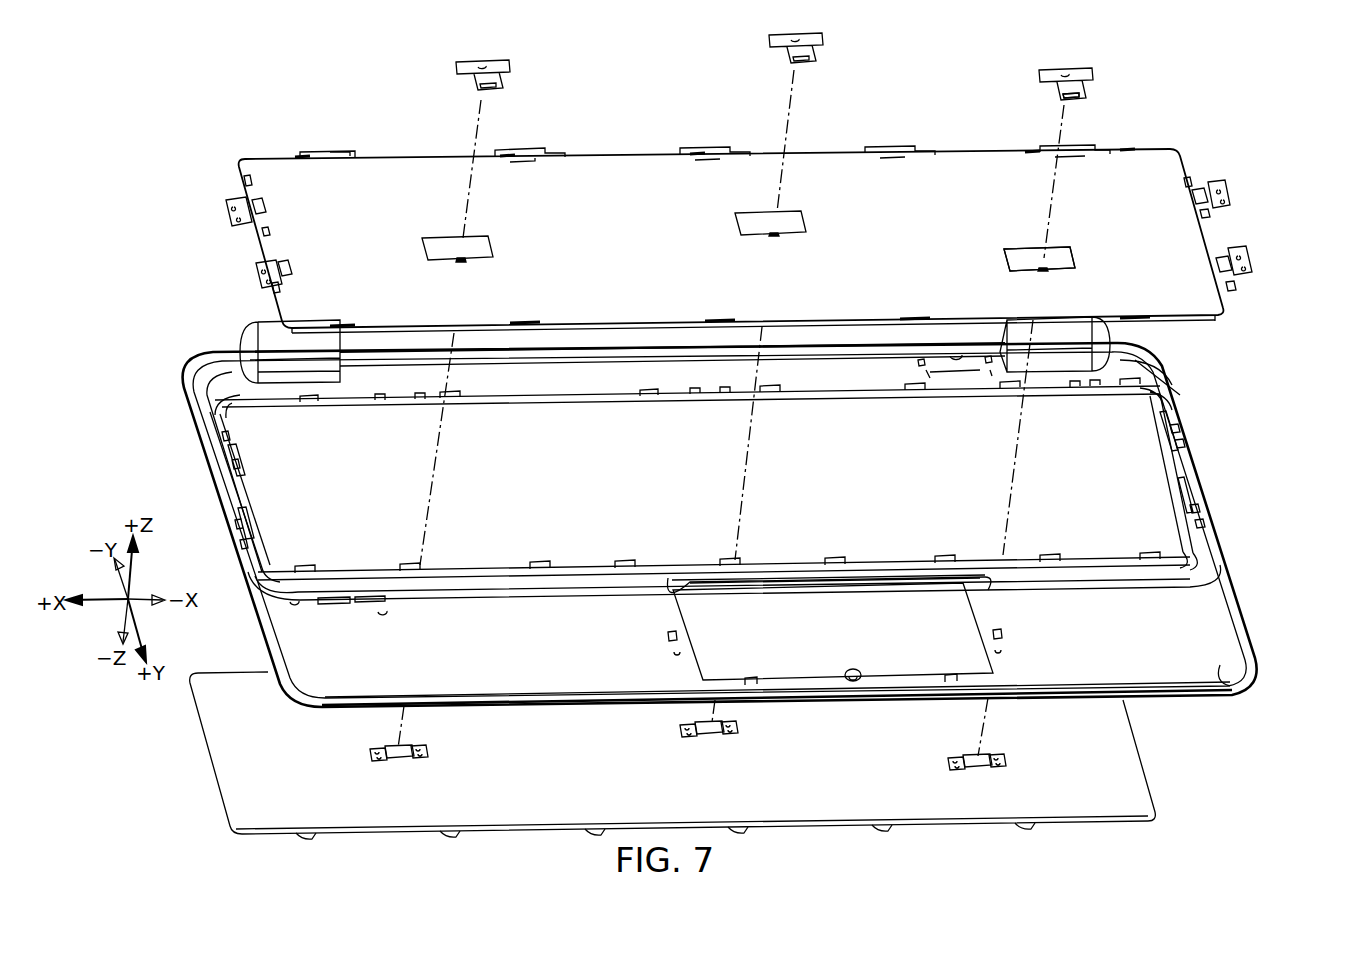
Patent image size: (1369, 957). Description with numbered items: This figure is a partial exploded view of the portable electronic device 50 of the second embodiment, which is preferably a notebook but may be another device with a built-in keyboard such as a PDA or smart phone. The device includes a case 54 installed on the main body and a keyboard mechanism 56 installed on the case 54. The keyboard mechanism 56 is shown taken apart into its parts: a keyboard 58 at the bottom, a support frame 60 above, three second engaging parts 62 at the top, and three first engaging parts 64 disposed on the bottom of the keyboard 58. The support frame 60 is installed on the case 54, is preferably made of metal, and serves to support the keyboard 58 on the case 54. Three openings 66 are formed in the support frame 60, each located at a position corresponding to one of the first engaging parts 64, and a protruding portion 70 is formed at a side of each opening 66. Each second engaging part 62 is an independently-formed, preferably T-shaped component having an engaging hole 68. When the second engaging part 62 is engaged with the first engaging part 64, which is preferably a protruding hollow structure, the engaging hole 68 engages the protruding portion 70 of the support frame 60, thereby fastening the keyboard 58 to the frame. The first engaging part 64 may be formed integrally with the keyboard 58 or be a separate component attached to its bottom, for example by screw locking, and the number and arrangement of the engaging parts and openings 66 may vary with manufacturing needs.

The portable electronic device 50 is at (170, 56).
The case 54 is at (297, 625).
The keyboard mechanism 56 is at (1288, 736).
The keyboard 58 is at (1123, 770).
The support frame 60 is at (1185, 230).
The second engaging part 62 is at (1089, 74).
The first engaging part 64 is at (984, 768).
The opening 66 is at (1071, 254).
The engaging hole 68 is at (1088, 105).
The protruding portion 70 is at (1042, 269).